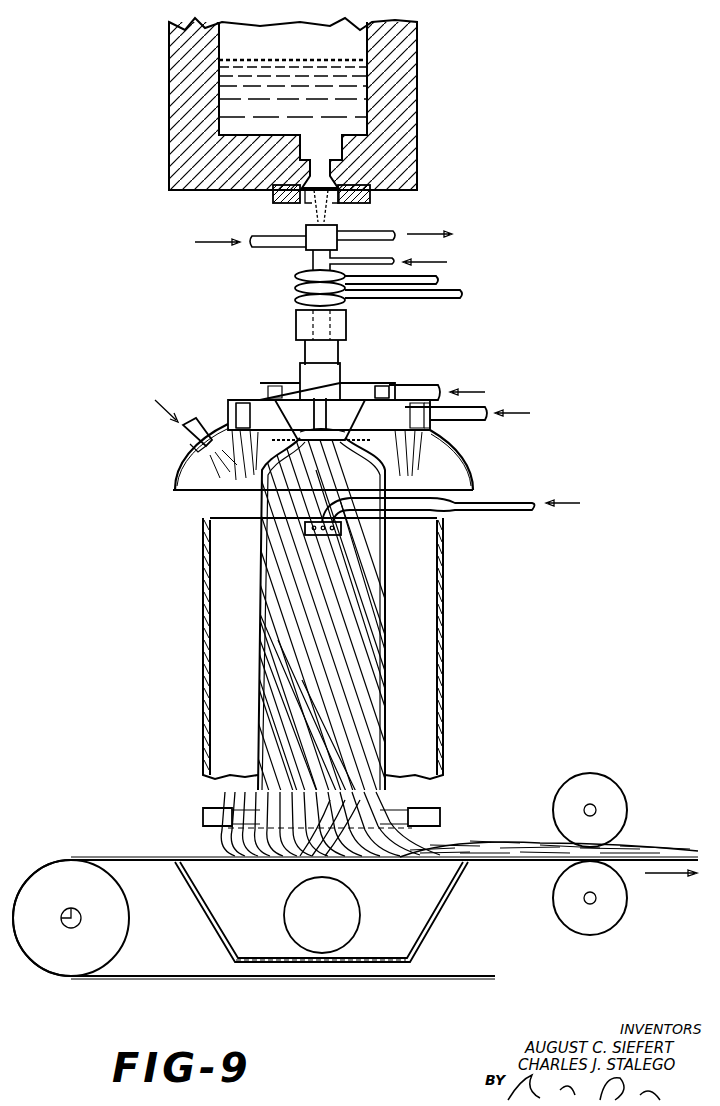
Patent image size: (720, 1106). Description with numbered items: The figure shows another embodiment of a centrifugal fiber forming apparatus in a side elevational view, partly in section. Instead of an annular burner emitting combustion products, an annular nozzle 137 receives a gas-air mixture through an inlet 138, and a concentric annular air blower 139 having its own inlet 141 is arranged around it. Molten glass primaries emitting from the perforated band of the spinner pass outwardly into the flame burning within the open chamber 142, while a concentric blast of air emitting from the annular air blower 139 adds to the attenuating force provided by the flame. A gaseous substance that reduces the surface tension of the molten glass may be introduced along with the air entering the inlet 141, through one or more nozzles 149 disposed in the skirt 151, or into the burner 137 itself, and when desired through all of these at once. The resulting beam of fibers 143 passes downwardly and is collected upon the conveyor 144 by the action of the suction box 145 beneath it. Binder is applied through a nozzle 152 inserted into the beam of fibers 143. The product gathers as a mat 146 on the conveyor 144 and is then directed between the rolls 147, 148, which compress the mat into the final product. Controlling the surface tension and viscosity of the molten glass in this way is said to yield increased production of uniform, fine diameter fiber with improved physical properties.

The annular nozzle 137 is at (377, 386).
The inlet 138 is at (398, 390).
The annular air blower 139 is at (410, 428).
The inlet 141 is at (480, 413).
The open chamber 142 is at (258, 415).
The beam of fibers 143 is at (420, 648).
The conveyor 144 is at (133, 858).
The suction box 145 is at (432, 930).
The mat 146 is at (470, 838).
The roll 147 is at (610, 792).
The roll 148 is at (605, 918).
The nozzle 149 is at (185, 437).
The skirt 151 is at (175, 481).
The nozzle 152 is at (345, 535).